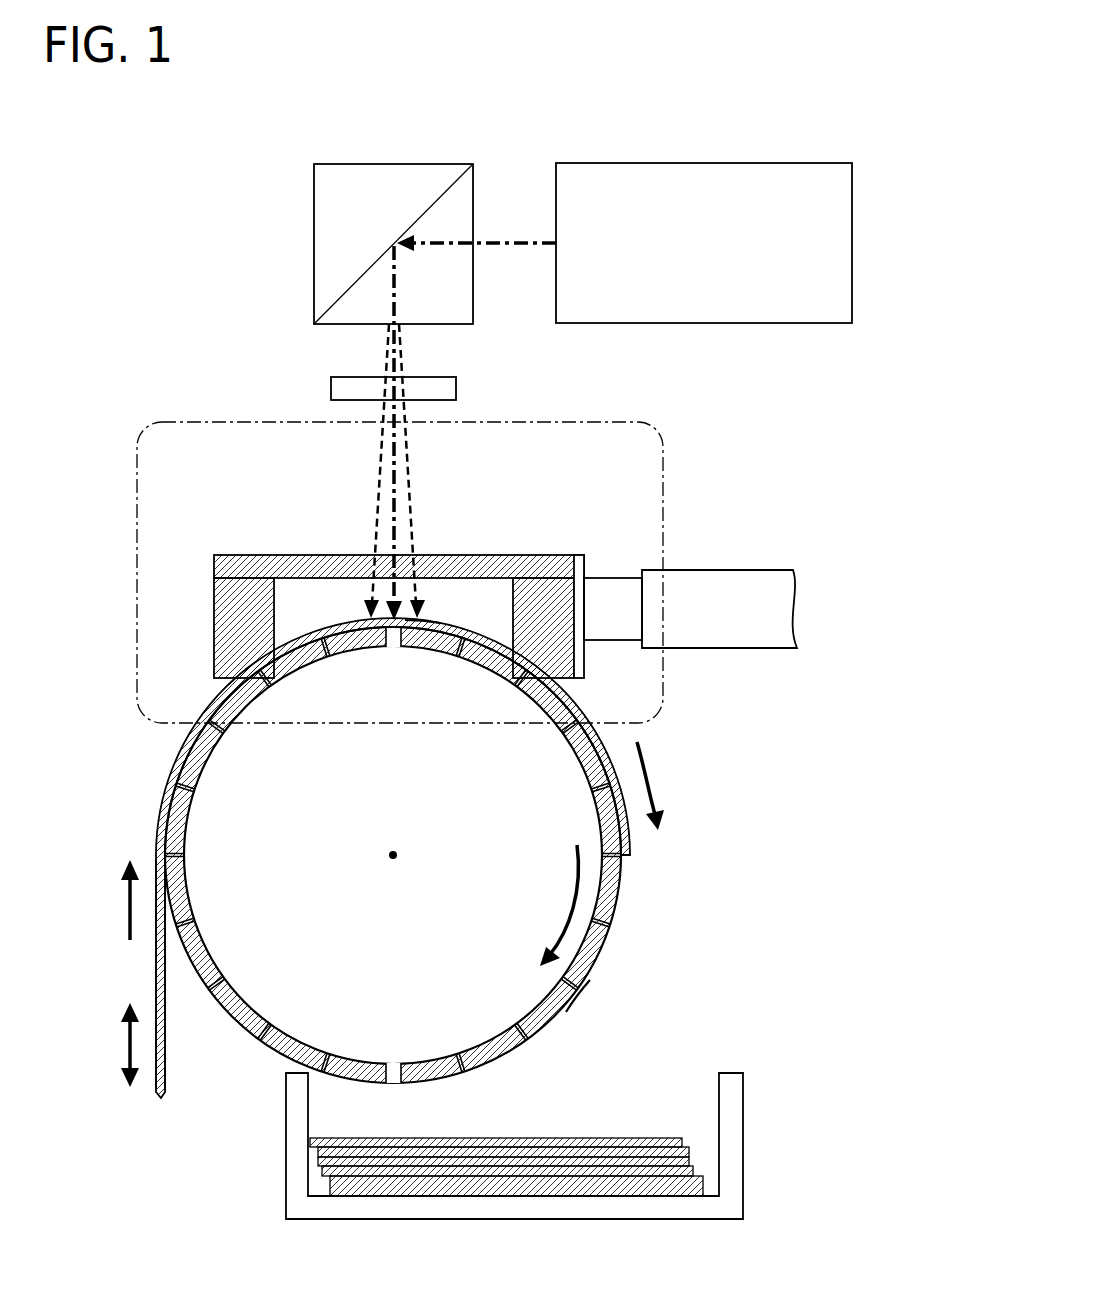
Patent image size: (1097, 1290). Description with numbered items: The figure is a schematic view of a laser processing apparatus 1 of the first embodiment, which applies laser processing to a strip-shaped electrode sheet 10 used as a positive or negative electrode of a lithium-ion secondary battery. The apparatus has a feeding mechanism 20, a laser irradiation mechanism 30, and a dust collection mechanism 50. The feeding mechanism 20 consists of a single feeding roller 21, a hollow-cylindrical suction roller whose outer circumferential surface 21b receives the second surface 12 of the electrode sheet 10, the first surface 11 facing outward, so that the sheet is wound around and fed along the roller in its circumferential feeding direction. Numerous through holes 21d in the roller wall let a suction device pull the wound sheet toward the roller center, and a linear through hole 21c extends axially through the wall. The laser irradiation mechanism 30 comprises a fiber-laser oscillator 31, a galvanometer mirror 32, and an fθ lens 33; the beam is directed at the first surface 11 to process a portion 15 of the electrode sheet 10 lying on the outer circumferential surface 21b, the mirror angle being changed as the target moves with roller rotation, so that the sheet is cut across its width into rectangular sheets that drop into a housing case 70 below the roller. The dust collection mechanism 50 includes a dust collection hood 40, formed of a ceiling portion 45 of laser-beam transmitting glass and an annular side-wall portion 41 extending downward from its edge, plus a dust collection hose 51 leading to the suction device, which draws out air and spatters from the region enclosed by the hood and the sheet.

The laser processing apparatus 1 is at (188, 238).
The electrode sheet 10 is at (580, 698).
The first surface 11 is at (345, 618).
The second surface 12 is at (166, 1060).
The portion 15 is at (423, 617).
The feeding mechanism 20 is at (636, 914).
The feeding roller 21 is at (272, 1048).
The outer circumferential surface 21b is at (566, 1012).
The linear through hole 21c is at (400, 642).
The through holes 21d is at (190, 789).
The laser irradiation mechanism 30 is at (614, 156).
The fiber-laser oscillator 31 is at (686, 258).
The galvanometer mirror 32 is at (314, 170).
The fθ lens 33 is at (335, 380).
The dust collection hood 40 is at (200, 584).
The annular side-wall portion 41 is at (536, 590).
The ceiling portion 45 is at (300, 557).
The dust collection mechanism 50 is at (608, 558).
The dust collection hose 51 is at (705, 578).
The housing case 70 is at (743, 1145).